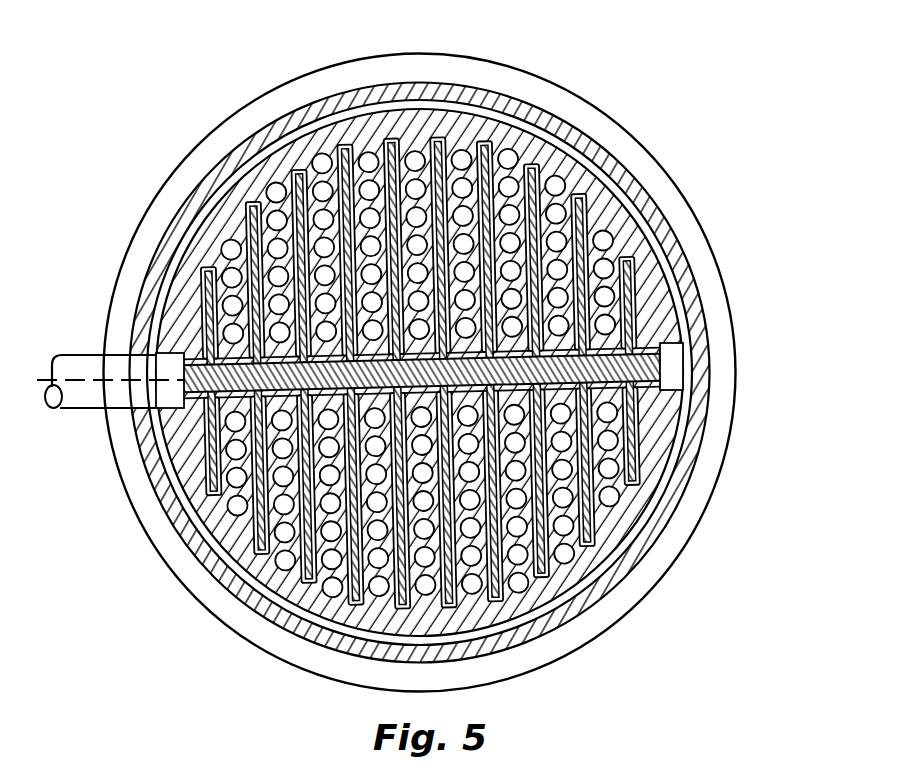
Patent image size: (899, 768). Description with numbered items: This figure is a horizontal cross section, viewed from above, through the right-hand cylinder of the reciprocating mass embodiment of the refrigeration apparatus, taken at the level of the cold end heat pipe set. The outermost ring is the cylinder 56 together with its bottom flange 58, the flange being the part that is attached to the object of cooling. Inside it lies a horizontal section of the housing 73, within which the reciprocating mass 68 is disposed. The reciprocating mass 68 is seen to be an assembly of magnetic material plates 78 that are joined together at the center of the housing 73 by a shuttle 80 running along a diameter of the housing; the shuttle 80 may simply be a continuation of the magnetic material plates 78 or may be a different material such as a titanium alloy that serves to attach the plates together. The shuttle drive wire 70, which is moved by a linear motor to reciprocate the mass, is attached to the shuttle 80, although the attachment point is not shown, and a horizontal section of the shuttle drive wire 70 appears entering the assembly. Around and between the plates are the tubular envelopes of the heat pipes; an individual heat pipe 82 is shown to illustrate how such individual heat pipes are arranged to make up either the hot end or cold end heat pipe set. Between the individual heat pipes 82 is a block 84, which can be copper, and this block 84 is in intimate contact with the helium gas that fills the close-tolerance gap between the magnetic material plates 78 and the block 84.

The cylinder 56 is at (530, 635).
The bottom flange 58 is at (242, 617).
The reciprocating mass 68 is at (643, 350).
The shuttle drive wire 70 is at (52, 388).
The housing 73 is at (82, 411).
The magnetic material plates 78 is at (637, 312).
The shuttle 80 is at (662, 378).
The individual heat pipe 82 is at (367, 158).
The block 84 is at (626, 258).